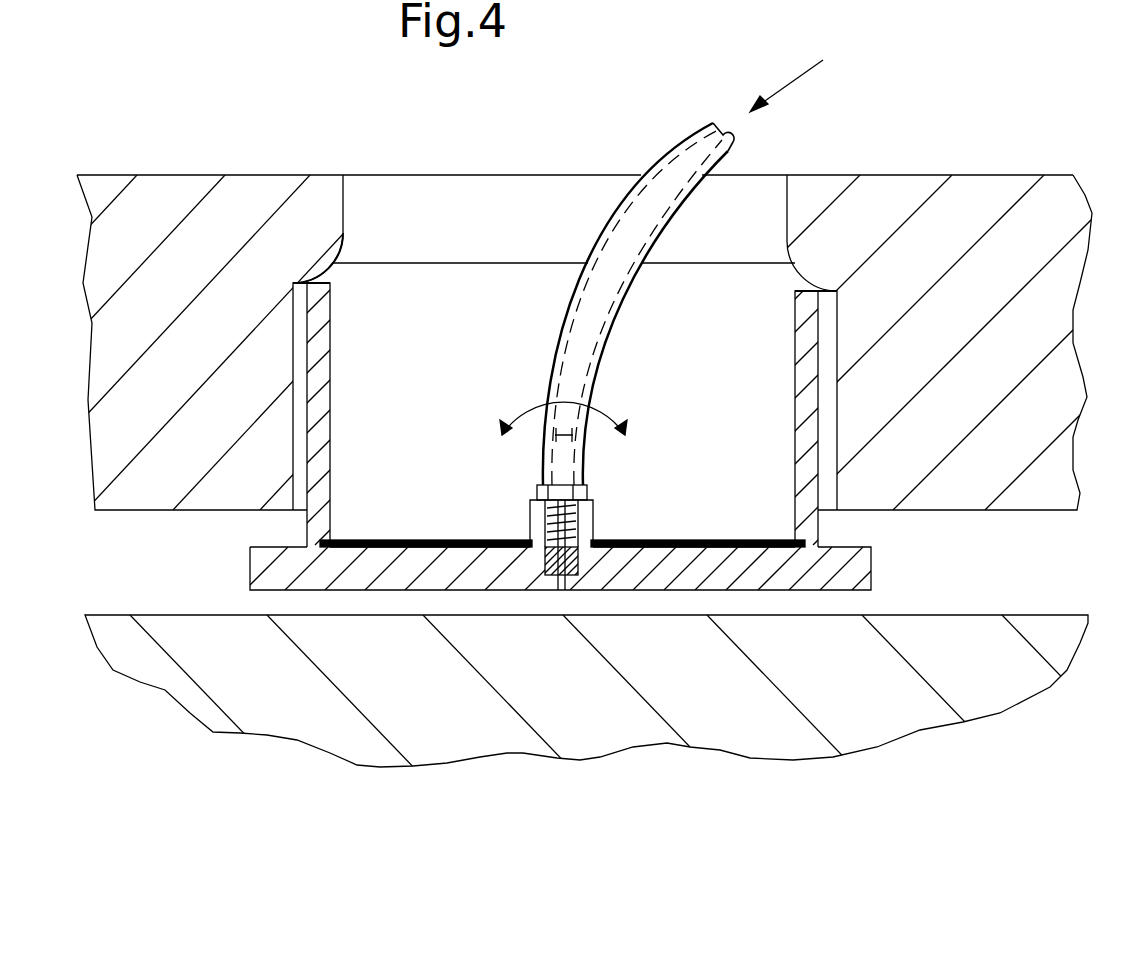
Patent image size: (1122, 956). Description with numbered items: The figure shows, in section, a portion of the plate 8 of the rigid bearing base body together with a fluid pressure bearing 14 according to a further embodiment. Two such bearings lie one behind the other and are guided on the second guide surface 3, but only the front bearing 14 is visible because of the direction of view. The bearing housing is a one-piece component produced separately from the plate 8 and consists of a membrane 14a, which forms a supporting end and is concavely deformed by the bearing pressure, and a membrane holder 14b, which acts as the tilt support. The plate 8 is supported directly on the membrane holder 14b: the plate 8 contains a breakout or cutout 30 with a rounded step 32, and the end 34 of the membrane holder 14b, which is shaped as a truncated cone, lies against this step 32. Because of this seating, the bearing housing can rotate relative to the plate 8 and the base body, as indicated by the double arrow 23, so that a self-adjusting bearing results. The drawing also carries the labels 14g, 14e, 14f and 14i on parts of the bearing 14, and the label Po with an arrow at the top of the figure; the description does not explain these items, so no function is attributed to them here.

The plate 8 is at (175, 200).
The cutout 30 is at (397, 176).
The rounded step 32 is at (340, 262).
The end of the membrane holder 34 is at (313, 268).
The double arrow 23 is at (520, 410).
The curved tube 14g is at (670, 168).
The nut 14e is at (545, 523).
The threaded fitting body 14f is at (592, 523).
The membrane holder 14b is at (813, 523).
The membrane 14a is at (857, 565).
The bolt 14i is at (560, 585).
The bearing 14 is at (740, 590).
The second guide surface 3 is at (137, 642).
The pressure Po is at (805, 76).